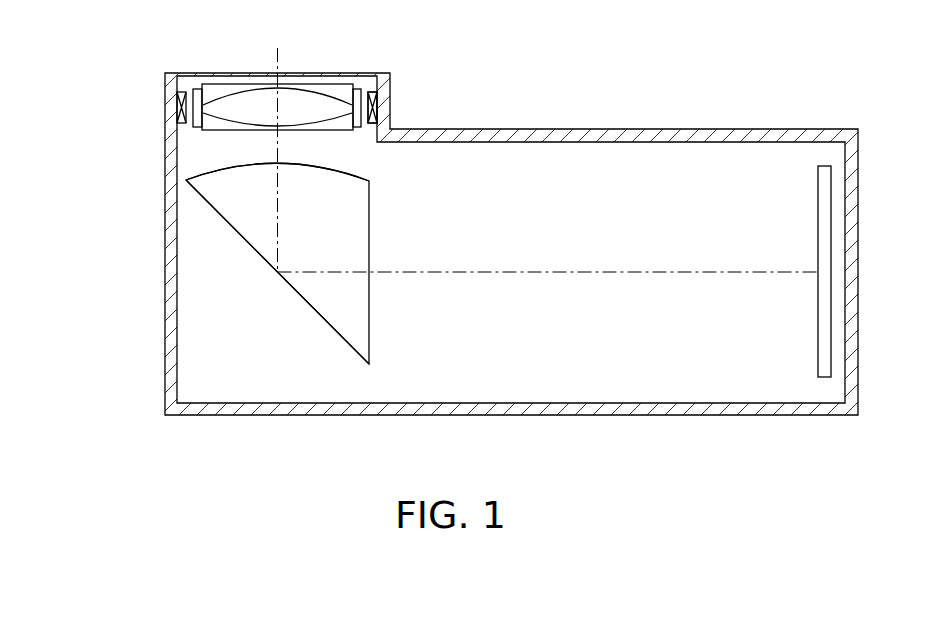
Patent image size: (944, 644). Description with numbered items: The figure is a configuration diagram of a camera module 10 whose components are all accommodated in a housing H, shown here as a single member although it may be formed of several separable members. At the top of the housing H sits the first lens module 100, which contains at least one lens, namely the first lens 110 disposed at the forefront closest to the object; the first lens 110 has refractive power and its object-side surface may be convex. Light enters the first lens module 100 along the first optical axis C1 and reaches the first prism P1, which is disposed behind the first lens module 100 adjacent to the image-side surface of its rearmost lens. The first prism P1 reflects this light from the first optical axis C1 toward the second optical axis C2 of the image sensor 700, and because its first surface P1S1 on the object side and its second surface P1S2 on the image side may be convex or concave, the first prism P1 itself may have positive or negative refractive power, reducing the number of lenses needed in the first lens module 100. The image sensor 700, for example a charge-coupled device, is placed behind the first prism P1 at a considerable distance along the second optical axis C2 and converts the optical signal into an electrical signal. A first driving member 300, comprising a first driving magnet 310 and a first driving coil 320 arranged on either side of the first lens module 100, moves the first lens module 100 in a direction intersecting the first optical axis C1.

The camera module 10 is at (449, 235).
The first lens module 100 is at (328, 73).
The first lens 110 is at (377, 107).
The first driving member 300 is at (208, 94).
The first driving magnet 310 is at (178, 93).
The first driving coil 320 is at (178, 113).
The image sensor 700 is at (824, 377).
The housing H is at (166, 308).
The first prism P1 is at (350, 345).
The first surface of the first prism P1S1 is at (212, 175).
The second surface of the first prism P1S2 is at (370, 343).
The first optical axis C1 is at (276, 148).
The second optical axis C2 is at (598, 272).